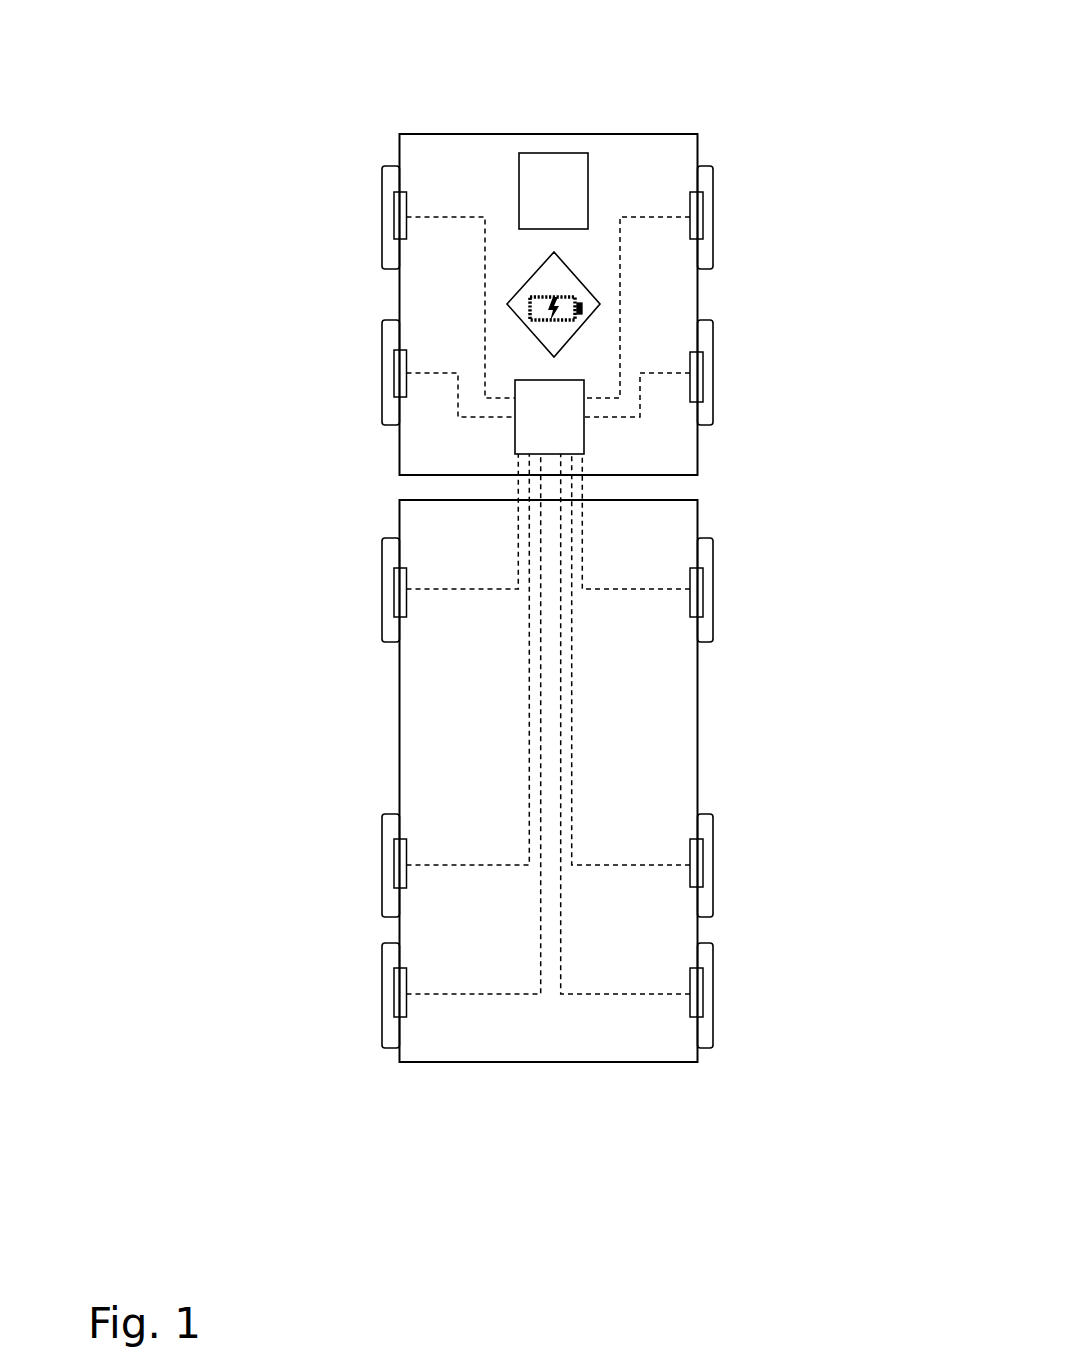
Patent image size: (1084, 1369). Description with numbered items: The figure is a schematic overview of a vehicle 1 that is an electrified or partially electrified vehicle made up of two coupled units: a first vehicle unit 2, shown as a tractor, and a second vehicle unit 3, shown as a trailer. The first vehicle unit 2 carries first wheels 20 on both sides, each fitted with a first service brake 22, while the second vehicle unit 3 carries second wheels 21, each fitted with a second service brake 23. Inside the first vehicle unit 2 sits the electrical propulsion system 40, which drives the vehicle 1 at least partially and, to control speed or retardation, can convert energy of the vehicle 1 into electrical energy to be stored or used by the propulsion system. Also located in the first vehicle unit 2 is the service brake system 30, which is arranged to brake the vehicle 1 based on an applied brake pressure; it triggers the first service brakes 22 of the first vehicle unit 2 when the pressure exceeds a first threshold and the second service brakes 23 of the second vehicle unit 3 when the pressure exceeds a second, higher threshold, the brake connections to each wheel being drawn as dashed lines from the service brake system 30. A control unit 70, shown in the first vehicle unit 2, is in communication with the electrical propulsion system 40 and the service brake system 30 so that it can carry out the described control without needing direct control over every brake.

The vehicle 1 is at (250, 118).
The first vehicle unit 2 is at (398, 472).
The second vehicle unit 3 is at (413, 1063).
The first wheels 20 is at (382, 185).
The second wheels 21 is at (382, 573).
The first service brakes 22 is at (407, 199).
The second service brakes 23 is at (407, 574).
The service brake system 30 is at (515, 403).
The electrical propulsion system 40 is at (590, 313).
The control unit 70 is at (588, 198).